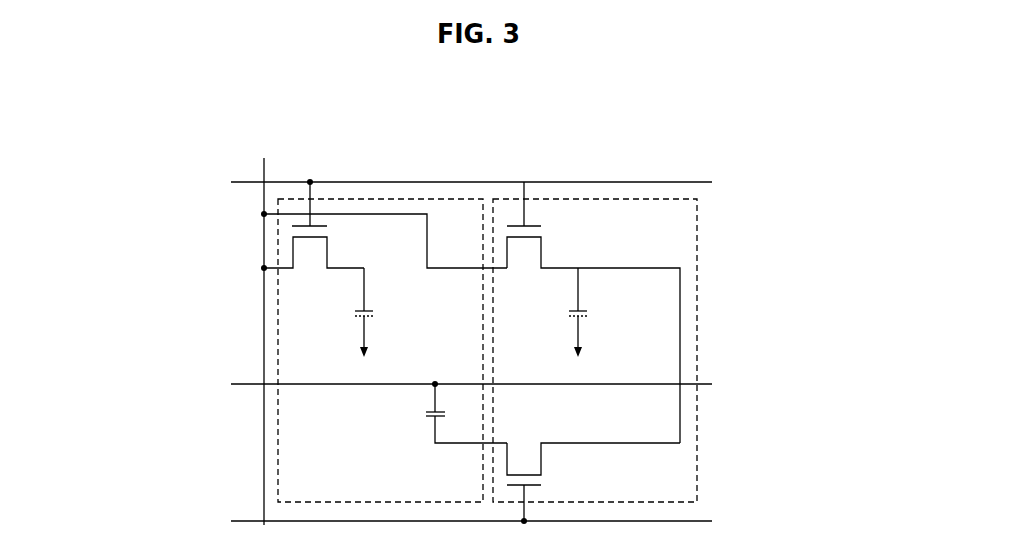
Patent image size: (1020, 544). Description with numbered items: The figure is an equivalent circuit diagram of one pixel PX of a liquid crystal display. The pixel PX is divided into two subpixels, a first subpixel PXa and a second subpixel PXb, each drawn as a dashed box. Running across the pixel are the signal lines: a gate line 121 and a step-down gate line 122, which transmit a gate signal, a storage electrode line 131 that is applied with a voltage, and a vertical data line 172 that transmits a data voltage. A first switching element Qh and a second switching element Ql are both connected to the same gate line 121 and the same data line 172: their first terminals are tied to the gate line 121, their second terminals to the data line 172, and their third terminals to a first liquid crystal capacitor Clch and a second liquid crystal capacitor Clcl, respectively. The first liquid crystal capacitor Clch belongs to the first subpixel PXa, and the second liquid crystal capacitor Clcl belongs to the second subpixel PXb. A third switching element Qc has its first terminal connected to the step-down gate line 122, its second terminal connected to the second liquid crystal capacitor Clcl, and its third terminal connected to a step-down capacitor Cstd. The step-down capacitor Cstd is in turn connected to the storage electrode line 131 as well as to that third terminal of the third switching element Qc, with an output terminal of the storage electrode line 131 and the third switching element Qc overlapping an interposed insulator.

The gate line 121 is at (490, 182).
The storage electrode line 131 is at (490, 384).
The step-down gate line 122 is at (490, 522).
The data line 172 is at (263, 173).
The pixel PX is at (537, 120).
The first subpixel PXa is at (433, 199).
The second subpixel PXb is at (555, 199).
The first switching element Qh is at (314, 236).
The second switching element Ql is at (593, 312).
The third switching element Qc is at (593, 472).
The first liquid crystal capacitor Clch is at (340, 312).
The second liquid crystal capacitor Clcl is at (558, 312).
The step-down capacitor Cstd is at (442, 413).